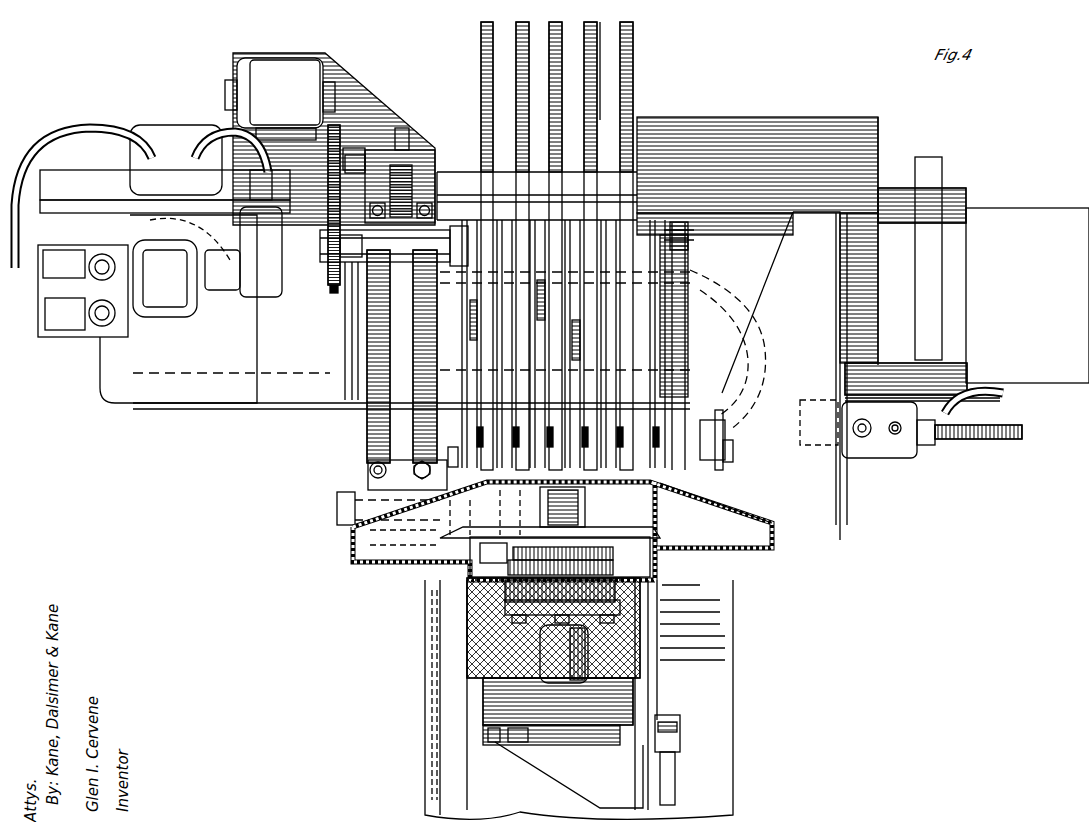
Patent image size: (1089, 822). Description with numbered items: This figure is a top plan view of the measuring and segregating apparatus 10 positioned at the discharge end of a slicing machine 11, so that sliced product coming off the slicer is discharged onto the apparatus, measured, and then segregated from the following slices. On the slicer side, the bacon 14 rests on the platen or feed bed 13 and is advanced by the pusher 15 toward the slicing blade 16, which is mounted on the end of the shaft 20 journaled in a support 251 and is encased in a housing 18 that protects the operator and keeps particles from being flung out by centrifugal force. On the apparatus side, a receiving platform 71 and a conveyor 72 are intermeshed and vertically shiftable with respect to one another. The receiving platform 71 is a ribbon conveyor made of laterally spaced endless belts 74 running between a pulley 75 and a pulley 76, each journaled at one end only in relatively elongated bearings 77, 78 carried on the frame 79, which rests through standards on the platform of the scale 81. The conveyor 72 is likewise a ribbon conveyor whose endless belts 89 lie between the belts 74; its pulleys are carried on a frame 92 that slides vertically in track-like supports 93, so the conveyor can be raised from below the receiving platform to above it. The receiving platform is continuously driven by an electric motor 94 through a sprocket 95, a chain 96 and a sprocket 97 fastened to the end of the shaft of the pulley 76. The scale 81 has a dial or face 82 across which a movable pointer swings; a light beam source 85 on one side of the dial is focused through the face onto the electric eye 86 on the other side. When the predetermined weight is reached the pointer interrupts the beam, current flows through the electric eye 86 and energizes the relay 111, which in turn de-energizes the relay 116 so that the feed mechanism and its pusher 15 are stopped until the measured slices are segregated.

The measuring and segregating apparatus 10 is at (464, 185).
The slicing machine 11 is at (747, 652).
The platen or feed bed 13 is at (523, 760).
The bacon 14 is at (620, 645).
The pusher 15 is at (615, 690).
The slicing blade 16 is at (740, 545).
The housing 18 is at (360, 545).
The shaft 20 is at (553, 650).
The receiving platform 71 is at (658, 384).
The conveyor 72 is at (498, 99).
The endless belts 74 is at (617, 341).
The pulley 75 is at (370, 480).
The pulley 76 is at (640, 238).
The elongated bearing 77 is at (355, 510).
The elongated bearing 78 is at (394, 197).
The frame 79 is at (412, 352).
The scale 81 is at (327, 331).
The dial or face 82 is at (172, 312).
The light beam source 85 is at (243, 252).
The electric eye 86 is at (100, 318).
The endless belts 89 is at (598, 70).
The frame 92 is at (452, 445).
The track-like supports 93 is at (718, 473).
The electric motor 94 is at (290, 70).
The sprocket 95 is at (336, 135).
The chain 96 is at (330, 190).
The sprocket 97 is at (334, 292).
The relay 111 is at (178, 122).
The relay 116 is at (890, 455).
The support 251 is at (505, 583).